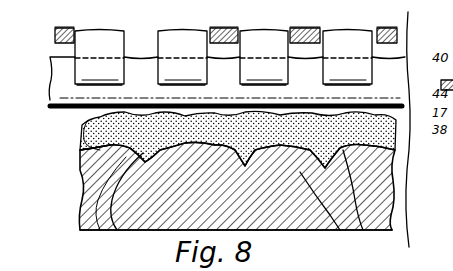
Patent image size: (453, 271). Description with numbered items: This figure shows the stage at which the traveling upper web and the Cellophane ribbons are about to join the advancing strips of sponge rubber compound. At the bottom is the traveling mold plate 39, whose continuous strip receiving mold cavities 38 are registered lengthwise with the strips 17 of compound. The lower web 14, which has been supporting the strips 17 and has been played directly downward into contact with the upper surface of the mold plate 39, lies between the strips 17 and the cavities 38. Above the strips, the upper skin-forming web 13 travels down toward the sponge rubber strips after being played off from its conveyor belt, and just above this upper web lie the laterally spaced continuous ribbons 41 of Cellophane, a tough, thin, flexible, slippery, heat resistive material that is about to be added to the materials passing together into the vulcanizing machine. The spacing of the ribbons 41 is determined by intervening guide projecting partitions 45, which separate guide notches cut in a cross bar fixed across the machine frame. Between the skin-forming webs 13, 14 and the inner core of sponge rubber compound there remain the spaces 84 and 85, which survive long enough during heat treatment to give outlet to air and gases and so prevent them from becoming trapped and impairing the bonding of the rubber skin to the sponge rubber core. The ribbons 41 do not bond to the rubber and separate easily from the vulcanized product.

The upper skin-forming web 13 is at (50, 88).
The lower web 14 is at (88, 152).
The strips of compound 17 is at (90, 128).
The strip receiving mold cavities 38 is at (88, 234).
The traveling mold plate 39 is at (88, 212).
The ribbons of Cellophane 41 is at (100, 82).
The guide projecting partitions 45 is at (210, 27).
The space between upper skin-forming web and sponge rubber core 84 is at (165, 108).
The space between lower skin-forming web and sponge rubber core 85 is at (92, 178).